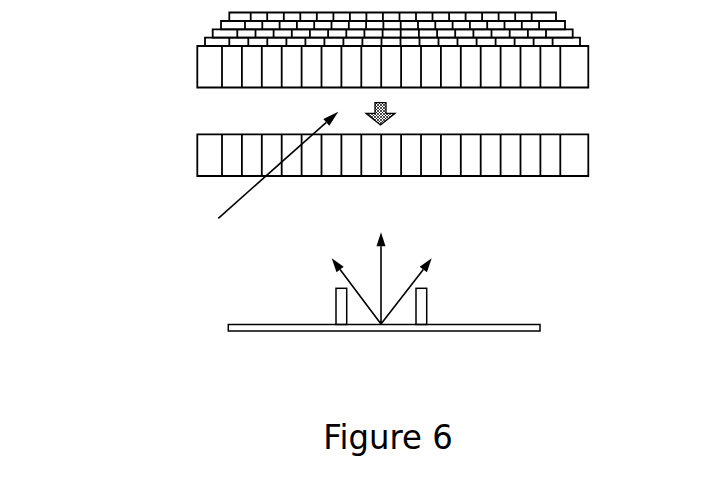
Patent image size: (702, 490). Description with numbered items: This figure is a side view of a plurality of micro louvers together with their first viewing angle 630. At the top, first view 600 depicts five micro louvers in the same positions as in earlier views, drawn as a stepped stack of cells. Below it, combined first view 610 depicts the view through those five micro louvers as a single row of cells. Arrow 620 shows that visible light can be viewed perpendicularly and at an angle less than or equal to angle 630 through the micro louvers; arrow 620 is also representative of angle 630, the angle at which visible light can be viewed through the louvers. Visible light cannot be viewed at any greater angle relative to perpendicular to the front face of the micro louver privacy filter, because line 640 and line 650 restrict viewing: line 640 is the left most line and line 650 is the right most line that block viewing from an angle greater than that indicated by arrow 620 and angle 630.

The first view 600 is at (158, 62).
The combined first view 610 is at (158, 155).
The arrow 620 is at (230, 208).
The first viewing angle 630 is at (343, 275).
The line 640 is at (340, 332).
The line 650 is at (422, 332).